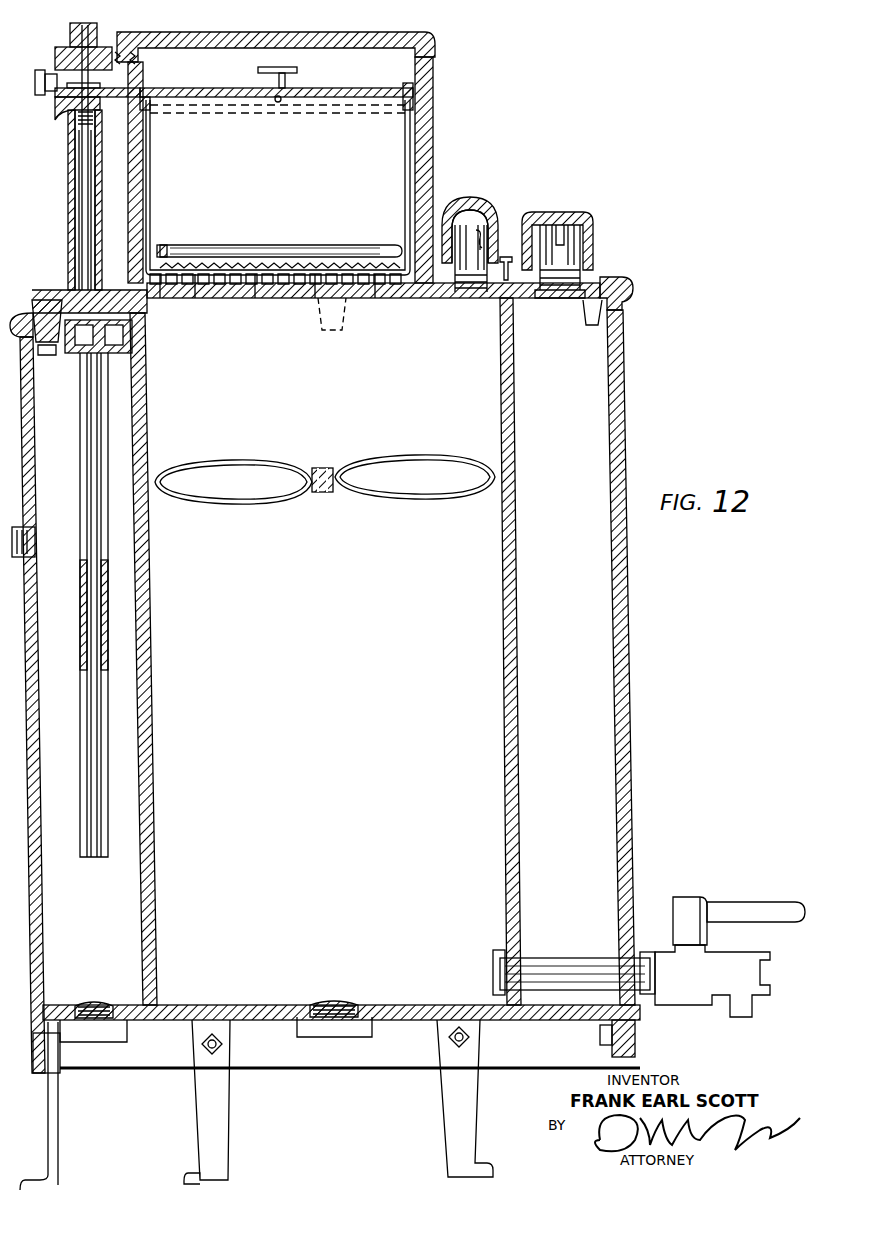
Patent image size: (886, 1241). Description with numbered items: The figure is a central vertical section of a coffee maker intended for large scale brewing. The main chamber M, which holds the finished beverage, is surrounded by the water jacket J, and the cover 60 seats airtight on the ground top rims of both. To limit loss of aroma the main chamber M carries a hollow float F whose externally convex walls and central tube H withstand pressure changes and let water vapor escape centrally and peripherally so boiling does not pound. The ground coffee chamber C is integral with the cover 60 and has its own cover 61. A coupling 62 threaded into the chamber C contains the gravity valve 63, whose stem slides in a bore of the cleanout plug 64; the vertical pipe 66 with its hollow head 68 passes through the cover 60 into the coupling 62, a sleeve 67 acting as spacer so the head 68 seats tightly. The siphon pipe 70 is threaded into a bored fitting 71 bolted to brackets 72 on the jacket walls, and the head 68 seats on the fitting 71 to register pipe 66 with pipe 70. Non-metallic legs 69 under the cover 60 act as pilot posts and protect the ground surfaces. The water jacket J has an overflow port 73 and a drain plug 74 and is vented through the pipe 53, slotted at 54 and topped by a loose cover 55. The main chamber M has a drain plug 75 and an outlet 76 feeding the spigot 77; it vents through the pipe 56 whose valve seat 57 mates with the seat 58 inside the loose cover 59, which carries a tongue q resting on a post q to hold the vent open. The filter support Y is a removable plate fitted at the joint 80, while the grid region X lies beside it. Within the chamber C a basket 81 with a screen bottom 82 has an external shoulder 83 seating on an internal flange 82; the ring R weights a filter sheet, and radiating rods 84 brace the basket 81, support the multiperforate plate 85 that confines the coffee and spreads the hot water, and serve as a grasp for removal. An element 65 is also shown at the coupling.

The cover 61 is at (437, 40).
The ground coffee chamber C is at (435, 150).
The external shoulder 83 is at (415, 97).
The gravity valve 63 is at (100, 88).
The multiperforate plate 85 is at (348, 88).
The radiating rods 84 is at (278, 103).
The screen bottom 82 is at (220, 110).
The basket 81 is at (150, 170).
The ring R is at (228, 245).
The grid X is at (262, 300).
The filter support Y is at (230, 300).
The hollow head 68 is at (70, 290).
The cleanout plug 64 is at (58, 48).
The bolt 65 is at (36, 88).
The coupling 62 is at (60, 108).
The sleeve 67 is at (68, 235).
The vertical pipe 66 is at (88, 150).
The brackets 72 is at (60, 358).
The bored fitting 71 is at (118, 335).
The siphon pipe 70 is at (75, 430).
The overflow port 73 is at (37, 545).
The joint 80 is at (163, 298).
The non-metallic legs 69 is at (338, 322).
The loose fitting cover 59 is at (485, 212).
The valve seat 58 is at (463, 210).
The vent pipe 56 is at (468, 295).
The valve seat 57 is at (506, 240).
The projecting tongue and post q is at (478, 320).
The loose fitting cover 55 is at (592, 215).
The slot 54 is at (557, 232).
The vent pipe 53 is at (546, 298).
The cover 60 is at (632, 285).
The water jacket J is at (612, 662).
The main chamber M is at (500, 662).
The float F is at (230, 505).
The central tube H is at (325, 493).
The outlet 76 is at (565, 958).
The spigot 77 is at (683, 897).
The drain plug 75 is at (330, 1003).
The drain plug 74 is at (92, 1005).